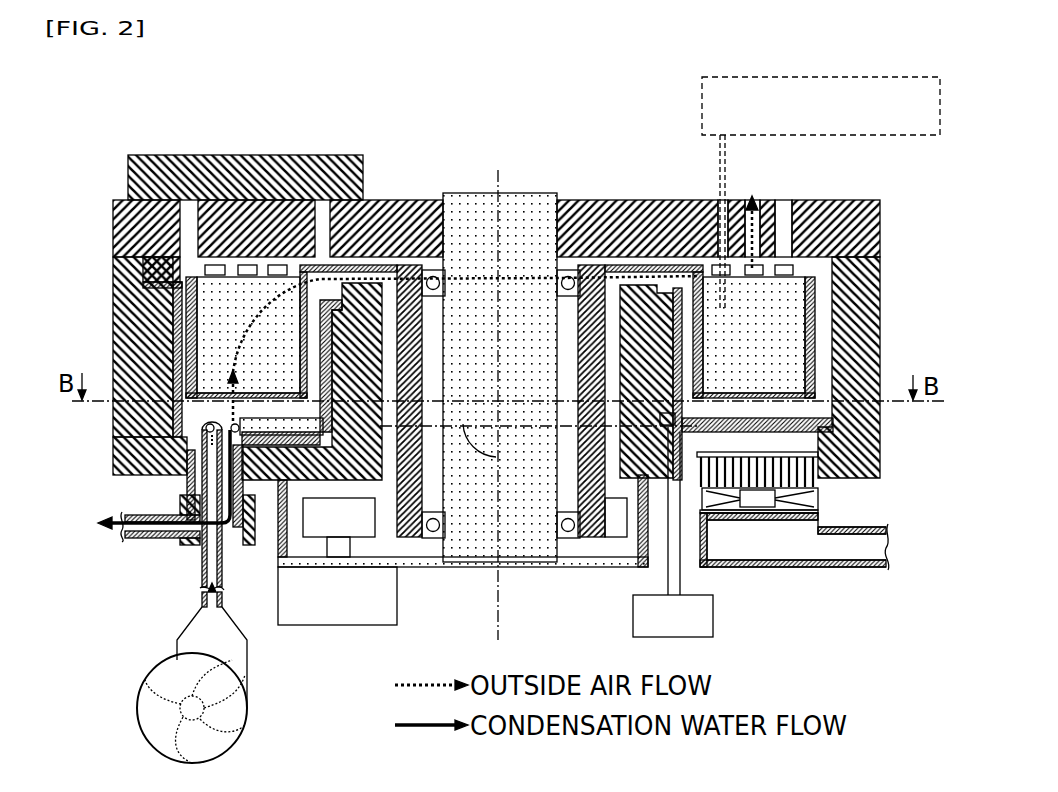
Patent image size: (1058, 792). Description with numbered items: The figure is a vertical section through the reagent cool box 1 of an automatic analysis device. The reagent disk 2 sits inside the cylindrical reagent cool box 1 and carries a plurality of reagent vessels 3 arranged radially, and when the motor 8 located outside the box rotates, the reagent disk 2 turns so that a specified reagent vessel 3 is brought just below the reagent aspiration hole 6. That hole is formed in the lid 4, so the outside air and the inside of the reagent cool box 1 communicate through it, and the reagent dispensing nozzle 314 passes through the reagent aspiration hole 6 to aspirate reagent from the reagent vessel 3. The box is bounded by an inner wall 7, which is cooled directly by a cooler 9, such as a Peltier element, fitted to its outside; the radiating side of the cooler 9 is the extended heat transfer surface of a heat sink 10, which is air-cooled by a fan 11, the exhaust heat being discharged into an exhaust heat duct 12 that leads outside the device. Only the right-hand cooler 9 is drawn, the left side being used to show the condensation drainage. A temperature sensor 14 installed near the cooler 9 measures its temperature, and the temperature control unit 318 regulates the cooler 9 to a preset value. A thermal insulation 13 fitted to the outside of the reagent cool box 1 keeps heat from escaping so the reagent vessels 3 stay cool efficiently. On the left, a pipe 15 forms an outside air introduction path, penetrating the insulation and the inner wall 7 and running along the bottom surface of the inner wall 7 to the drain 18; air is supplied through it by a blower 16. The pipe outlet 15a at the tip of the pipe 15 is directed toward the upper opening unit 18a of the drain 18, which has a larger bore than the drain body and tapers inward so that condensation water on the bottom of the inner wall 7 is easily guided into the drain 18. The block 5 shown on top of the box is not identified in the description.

The reagent cool box 1 is at (287, 128).
The reagent disk 2 is at (382, 264).
The reagent vessel 3 is at (782, 342).
The lid 4 is at (645, 200).
The top cover block 5 is at (162, 155).
The reagent aspiration hole 6 is at (712, 205).
The inner wall 7 is at (168, 328).
The motor 8 is at (400, 587).
The cooler 9 is at (790, 445).
The heat sink 10 is at (793, 480).
The fan 11 is at (820, 507).
The exhaust heat duct 12 is at (815, 570).
The thermal insulation 13 is at (882, 315).
The temperature sensor 14 is at (657, 427).
The pipe 15 is at (203, 553).
The pipe outlet 15a is at (205, 414).
The blower 16 is at (250, 662).
The drain 18 is at (192, 463).
The upper opening unit 18a is at (190, 448).
The reagent dispensing nozzle 314 is at (698, 73).
The temperature control unit 318 is at (633, 605).